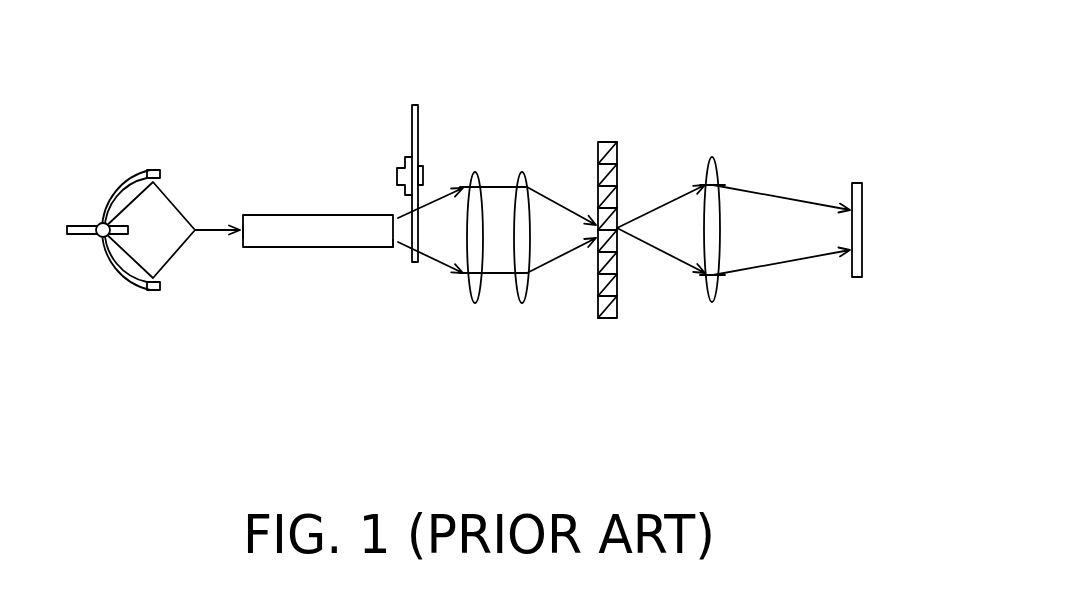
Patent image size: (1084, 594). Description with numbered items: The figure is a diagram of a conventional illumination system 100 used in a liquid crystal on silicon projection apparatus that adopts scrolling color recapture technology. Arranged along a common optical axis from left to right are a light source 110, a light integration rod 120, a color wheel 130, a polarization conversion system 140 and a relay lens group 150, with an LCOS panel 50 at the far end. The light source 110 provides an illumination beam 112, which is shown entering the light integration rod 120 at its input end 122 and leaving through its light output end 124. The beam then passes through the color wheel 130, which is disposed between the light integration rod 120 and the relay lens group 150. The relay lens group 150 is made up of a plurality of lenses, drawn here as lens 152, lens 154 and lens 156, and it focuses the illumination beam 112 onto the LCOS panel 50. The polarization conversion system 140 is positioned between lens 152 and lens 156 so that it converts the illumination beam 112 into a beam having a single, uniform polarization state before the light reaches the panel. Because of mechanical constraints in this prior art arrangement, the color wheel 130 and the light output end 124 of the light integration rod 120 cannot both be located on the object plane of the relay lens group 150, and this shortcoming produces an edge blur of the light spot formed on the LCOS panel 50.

The illumination system 100 is at (764, 113).
The light source 110 is at (153, 293).
The illumination beam 112 is at (215, 227).
The light integration rod 120 is at (302, 248).
The light incident end of integration rod 122 is at (231, 248).
The light output end 124 is at (396, 262).
The color wheel 130 is at (418, 128).
The polarization conversion system 140 is at (617, 152).
The relay lens group 150 is at (598, 291).
The lens 152 is at (475, 303).
The lens 154 is at (522, 303).
The lens 156 is at (718, 267).
The LCOS panel 50 is at (857, 277).